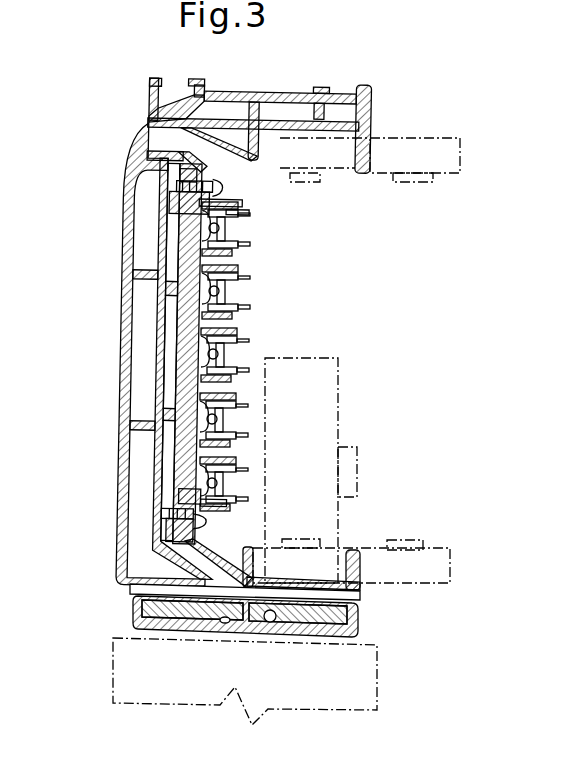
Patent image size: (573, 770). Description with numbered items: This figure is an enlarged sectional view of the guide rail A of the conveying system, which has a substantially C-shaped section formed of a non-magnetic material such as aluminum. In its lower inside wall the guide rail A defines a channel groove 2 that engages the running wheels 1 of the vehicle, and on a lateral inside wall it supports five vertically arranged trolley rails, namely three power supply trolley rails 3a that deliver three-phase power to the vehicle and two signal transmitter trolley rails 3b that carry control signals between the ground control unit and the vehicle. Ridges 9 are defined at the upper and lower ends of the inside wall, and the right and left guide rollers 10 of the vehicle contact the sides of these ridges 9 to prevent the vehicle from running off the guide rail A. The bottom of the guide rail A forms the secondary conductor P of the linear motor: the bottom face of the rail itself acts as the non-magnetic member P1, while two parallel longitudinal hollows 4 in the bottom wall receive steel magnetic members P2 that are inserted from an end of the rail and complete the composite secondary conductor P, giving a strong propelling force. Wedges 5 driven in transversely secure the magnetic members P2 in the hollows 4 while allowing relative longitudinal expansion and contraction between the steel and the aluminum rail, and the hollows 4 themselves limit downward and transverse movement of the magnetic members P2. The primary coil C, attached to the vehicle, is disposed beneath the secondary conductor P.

The guide rail A is at (122, 235).
The running wheels 1 is at (340, 423).
The channel groove 2 is at (278, 571).
The power supply trolley rails 3a is at (232, 228).
The signal transmitter trolley rails 3b is at (240, 480).
The hollows 4 is at (295, 651).
The wedges 5 is at (130, 584).
The ridges 9 is at (366, 174).
The guide rollers 10 is at (433, 138).
The primary coil C is at (113, 665).
The secondary conductor P is at (295, 651).
The non-magnetic member P1 is at (345, 638).
The magnetic members P2 is at (158, 620).